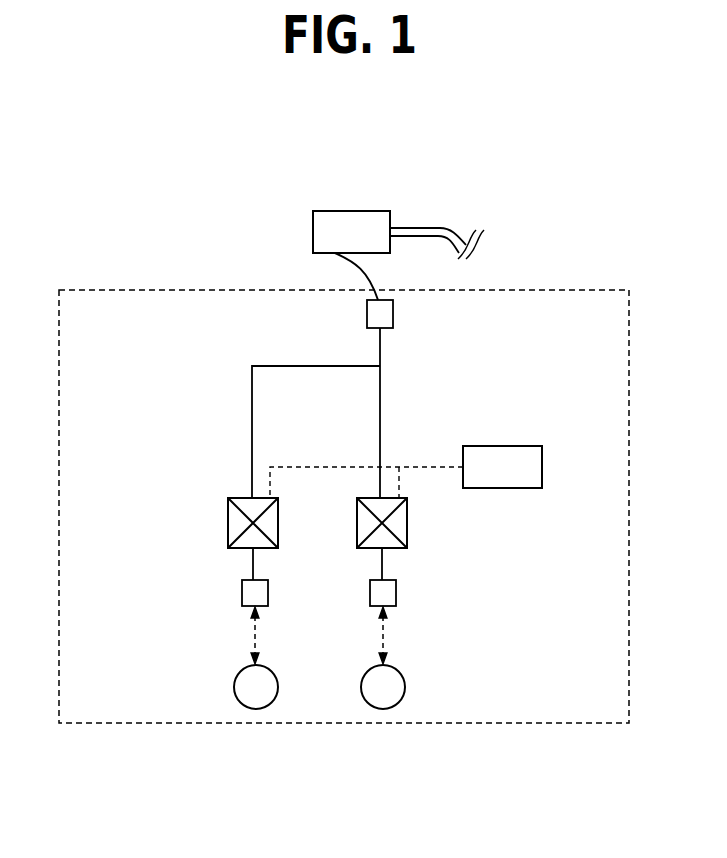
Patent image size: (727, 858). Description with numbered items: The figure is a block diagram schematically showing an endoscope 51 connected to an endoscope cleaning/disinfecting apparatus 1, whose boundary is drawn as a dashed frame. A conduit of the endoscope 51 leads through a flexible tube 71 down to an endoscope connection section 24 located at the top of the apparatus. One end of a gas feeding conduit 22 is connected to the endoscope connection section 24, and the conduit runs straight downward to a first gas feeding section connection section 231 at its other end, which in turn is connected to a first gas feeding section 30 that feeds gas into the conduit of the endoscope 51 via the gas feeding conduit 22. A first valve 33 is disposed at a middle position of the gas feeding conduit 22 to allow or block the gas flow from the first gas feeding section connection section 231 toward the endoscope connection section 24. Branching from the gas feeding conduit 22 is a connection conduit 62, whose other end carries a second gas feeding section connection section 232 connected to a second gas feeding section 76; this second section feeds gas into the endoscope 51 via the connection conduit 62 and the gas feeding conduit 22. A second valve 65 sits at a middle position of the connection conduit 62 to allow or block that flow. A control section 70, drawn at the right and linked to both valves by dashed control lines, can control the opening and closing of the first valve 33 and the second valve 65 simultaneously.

The endoscope cleaning/disinfecting apparatus 1 is at (108, 290).
The endoscope 51 is at (350, 211).
The supply tube 71 is at (362, 275).
The endoscope connection section 24 is at (393, 313).
The gas feeding conduit 22 is at (380, 355).
The connection conduit 62 is at (283, 366).
The control section 70 is at (503, 446).
The second valve 65 is at (228, 521).
The first valve 33 is at (407, 522).
The second gas feeding section connection section 232 is at (242, 593).
The first gas feeding section connection section 231 is at (396, 593).
The second gas feeding section 76 is at (234, 687).
The first gas feeding section 30 is at (405, 687).